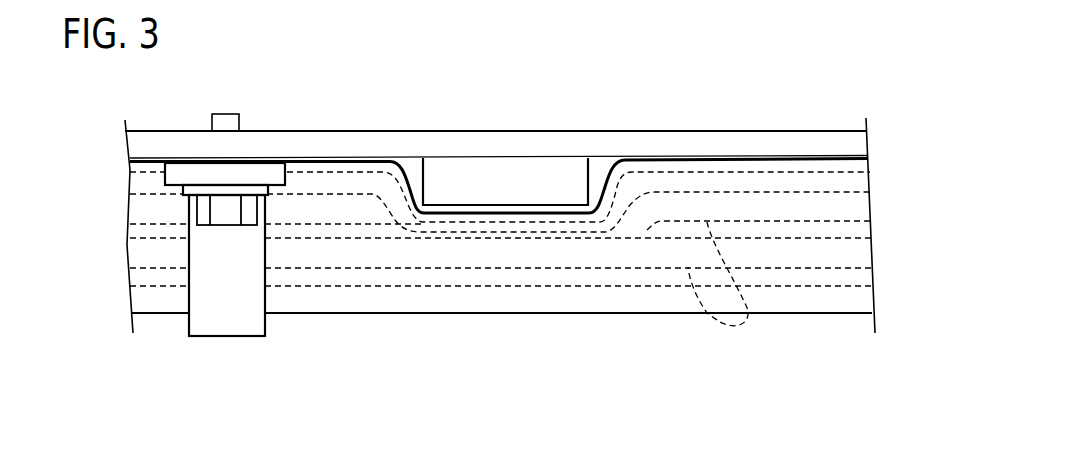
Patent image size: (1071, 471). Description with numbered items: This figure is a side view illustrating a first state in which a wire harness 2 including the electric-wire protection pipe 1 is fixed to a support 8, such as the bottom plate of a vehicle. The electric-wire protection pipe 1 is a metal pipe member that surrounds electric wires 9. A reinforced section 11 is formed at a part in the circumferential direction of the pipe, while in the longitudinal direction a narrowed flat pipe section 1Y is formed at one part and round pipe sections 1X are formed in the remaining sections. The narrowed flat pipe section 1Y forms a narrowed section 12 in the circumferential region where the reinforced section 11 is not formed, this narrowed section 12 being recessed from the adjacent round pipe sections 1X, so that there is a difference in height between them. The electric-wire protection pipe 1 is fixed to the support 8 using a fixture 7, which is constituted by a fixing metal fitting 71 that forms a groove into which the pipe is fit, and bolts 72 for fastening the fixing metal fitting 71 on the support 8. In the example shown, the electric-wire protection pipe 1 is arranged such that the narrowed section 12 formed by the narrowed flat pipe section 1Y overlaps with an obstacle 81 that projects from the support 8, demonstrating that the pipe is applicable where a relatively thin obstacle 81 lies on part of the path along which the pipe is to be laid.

The electric-wire protection pipe 1 is at (722, 352).
The round pipe sections 1X is at (305, 315).
The narrowed flat pipe section 1Y is at (502, 315).
The wire harness 2 is at (121, 180).
The fixture 7 is at (193, 353).
The fixing metal fitting 71 is at (227, 338).
The bolts 72 is at (257, 208).
The support 8 is at (663, 130).
The obstacle 81 is at (588, 182).
The electric wires 9 is at (731, 289).
The reinforced section 11 is at (573, 287).
The narrowed section 12 is at (462, 212).